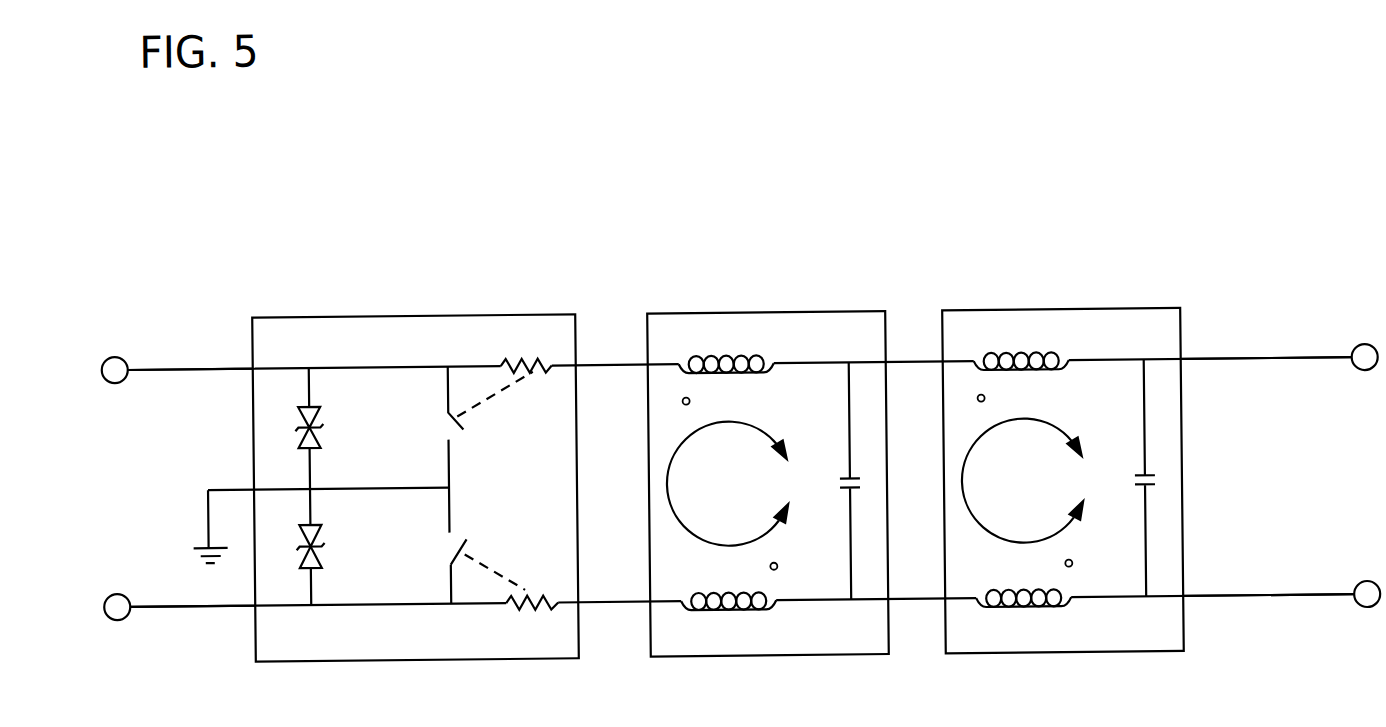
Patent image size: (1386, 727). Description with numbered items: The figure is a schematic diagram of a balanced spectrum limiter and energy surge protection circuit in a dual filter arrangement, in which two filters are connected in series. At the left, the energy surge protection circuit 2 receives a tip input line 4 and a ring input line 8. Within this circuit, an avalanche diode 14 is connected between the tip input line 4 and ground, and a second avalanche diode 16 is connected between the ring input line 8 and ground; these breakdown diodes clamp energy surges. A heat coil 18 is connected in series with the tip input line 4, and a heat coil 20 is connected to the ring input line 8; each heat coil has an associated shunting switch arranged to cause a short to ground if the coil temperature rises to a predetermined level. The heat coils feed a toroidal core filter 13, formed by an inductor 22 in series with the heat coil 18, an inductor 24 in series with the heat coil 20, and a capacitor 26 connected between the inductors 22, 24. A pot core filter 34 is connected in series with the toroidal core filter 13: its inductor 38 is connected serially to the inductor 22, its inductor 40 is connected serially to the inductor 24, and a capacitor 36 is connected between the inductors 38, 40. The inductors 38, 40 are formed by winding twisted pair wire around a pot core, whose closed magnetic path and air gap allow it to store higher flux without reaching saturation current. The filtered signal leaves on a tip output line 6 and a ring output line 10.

The energy surge protection circuit 2 is at (415, 312).
The tip input line 4 is at (157, 364).
The tip output line 6 is at (1292, 364).
The ring input line 8 is at (157, 601).
The ring output line 10 is at (1322, 601).
The toroidal core filter 13 is at (818, 312).
The avalanche diode 14 is at (322, 413).
The avalanche diode 16 is at (322, 532).
The heat coil 18 is at (500, 393).
The heat coil 20 is at (522, 583).
The inductor 22 is at (725, 358).
The inductor 24 is at (755, 616).
The capacitor 26 is at (845, 478).
The pot core filter 34 is at (1062, 433).
The capacitor 36 is at (1131, 477).
The inductor 38 is at (1026, 341).
The inductor 40 is at (1037, 619).